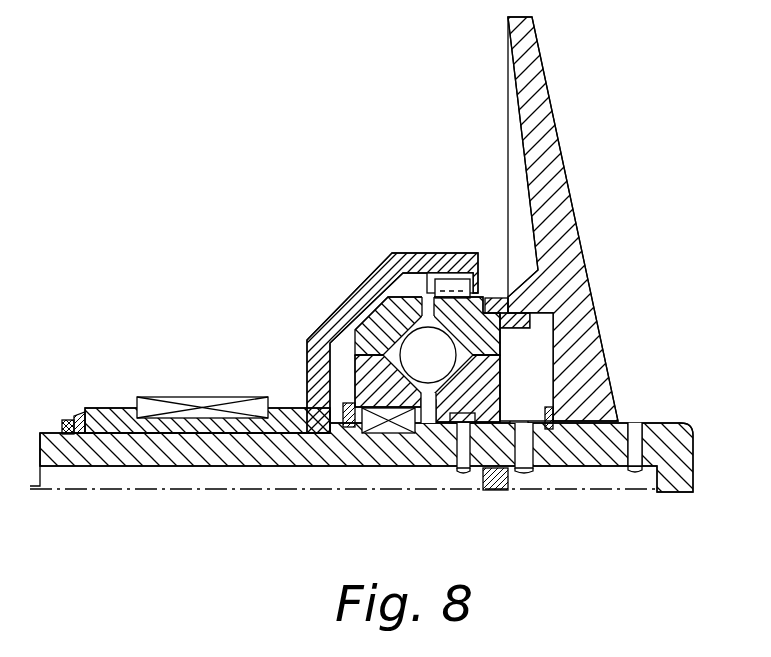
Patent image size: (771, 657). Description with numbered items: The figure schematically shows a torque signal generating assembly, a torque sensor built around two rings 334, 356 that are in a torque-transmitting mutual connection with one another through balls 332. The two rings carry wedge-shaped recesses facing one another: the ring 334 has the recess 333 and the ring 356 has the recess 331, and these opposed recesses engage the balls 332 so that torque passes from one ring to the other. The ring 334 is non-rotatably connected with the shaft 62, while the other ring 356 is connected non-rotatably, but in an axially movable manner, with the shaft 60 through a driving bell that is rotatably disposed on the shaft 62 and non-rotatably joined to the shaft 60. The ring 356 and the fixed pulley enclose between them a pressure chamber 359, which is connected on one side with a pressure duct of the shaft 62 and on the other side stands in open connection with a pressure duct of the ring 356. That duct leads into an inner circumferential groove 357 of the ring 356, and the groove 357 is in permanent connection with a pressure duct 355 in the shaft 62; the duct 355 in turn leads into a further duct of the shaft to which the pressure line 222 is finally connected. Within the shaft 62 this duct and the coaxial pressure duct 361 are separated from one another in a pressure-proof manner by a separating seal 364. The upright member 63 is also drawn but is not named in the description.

The shaft 60 is at (102, 412).
The shaft 62 is at (153, 450).
The upright arm 63 is at (520, 56).
The pressure line 222 is at (240, 477).
The wedge-shaped recess 331 is at (432, 322).
The balls 332 is at (392, 328).
The wedge-shaped recess 333 is at (392, 378).
The ring 334 is at (363, 373).
The pressure duct 355 is at (465, 472).
The ring 356 is at (453, 317).
The inner circumferential groove 357 is at (487, 393).
The pressure chamber 359 is at (510, 330).
The pressure duct 361 is at (567, 480).
The separating seal 364 is at (500, 493).